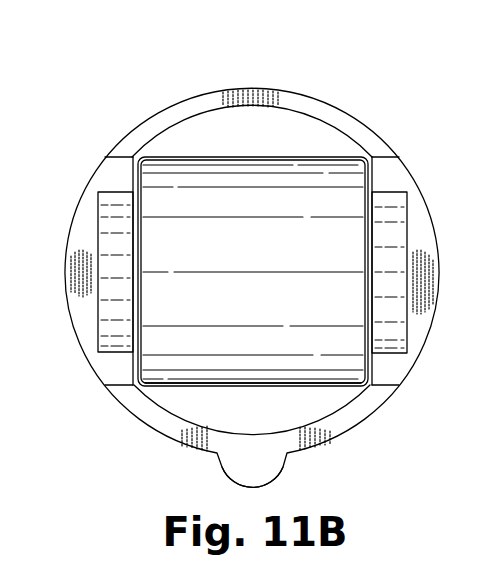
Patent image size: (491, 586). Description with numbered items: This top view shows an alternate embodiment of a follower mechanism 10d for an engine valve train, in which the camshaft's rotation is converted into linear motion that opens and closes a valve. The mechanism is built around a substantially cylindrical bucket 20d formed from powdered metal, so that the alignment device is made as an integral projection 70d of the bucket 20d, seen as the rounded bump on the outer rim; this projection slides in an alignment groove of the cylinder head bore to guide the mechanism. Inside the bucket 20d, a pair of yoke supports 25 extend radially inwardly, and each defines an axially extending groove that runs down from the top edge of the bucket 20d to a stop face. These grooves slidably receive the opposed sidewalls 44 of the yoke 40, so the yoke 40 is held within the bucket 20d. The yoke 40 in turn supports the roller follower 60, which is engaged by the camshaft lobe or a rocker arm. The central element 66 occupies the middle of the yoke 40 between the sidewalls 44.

The follower mechanism 10d is at (405, 110).
The bucket 20d is at (170, 103).
The yoke support 25 is at (92, 305).
The yoke 40 is at (96, 255).
The sidewall 44 is at (407, 238).
The roller follower 60 is at (214, 392).
The central block 66 is at (268, 303).
The integral projection 70d is at (282, 468).